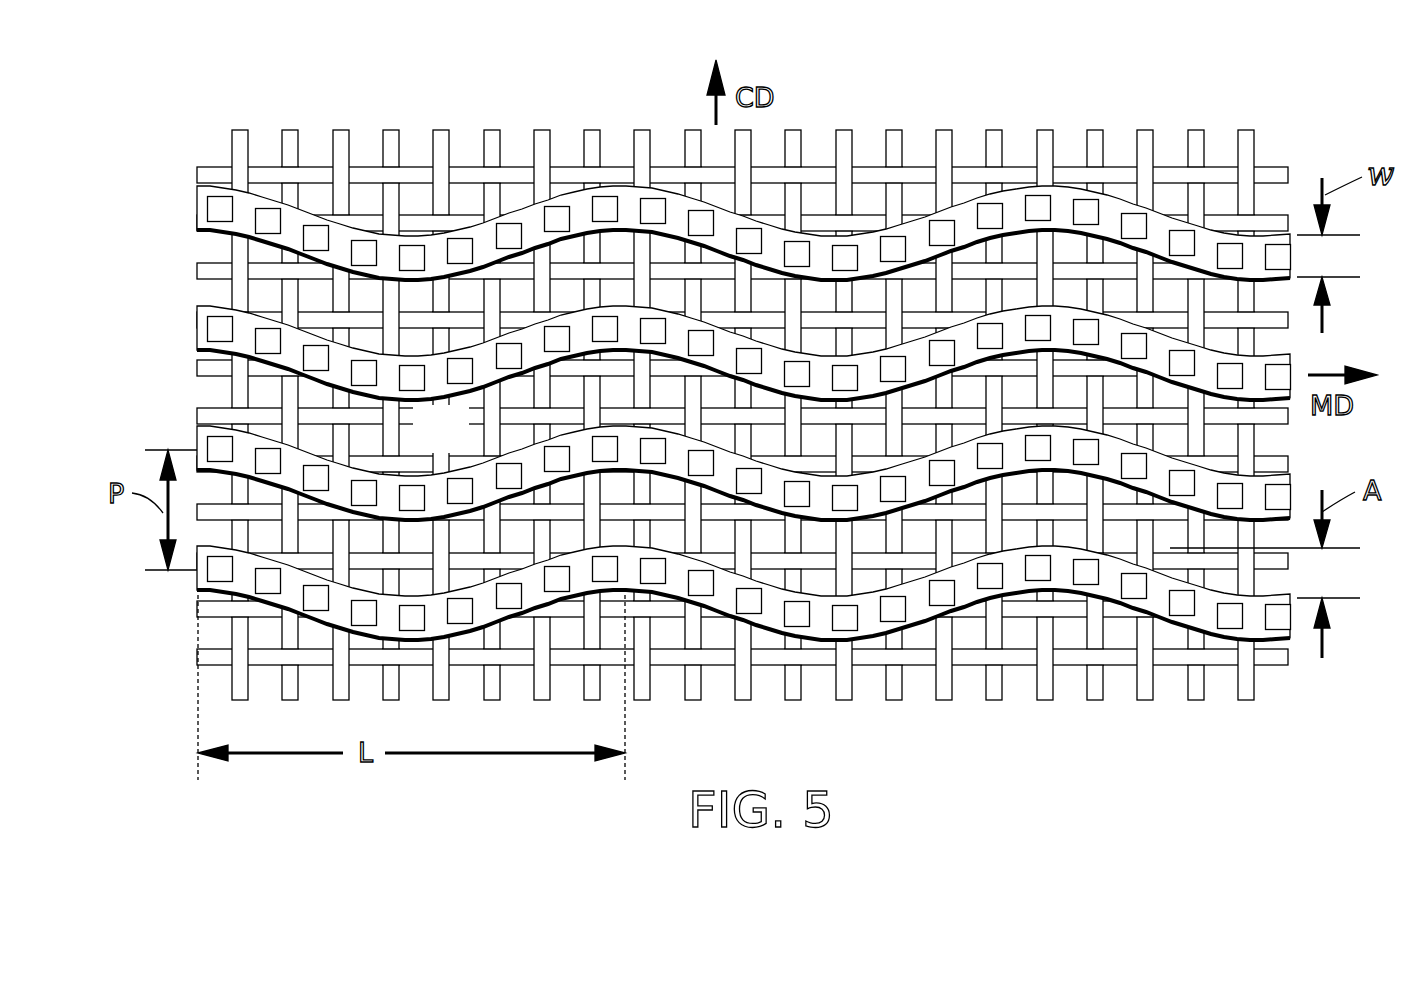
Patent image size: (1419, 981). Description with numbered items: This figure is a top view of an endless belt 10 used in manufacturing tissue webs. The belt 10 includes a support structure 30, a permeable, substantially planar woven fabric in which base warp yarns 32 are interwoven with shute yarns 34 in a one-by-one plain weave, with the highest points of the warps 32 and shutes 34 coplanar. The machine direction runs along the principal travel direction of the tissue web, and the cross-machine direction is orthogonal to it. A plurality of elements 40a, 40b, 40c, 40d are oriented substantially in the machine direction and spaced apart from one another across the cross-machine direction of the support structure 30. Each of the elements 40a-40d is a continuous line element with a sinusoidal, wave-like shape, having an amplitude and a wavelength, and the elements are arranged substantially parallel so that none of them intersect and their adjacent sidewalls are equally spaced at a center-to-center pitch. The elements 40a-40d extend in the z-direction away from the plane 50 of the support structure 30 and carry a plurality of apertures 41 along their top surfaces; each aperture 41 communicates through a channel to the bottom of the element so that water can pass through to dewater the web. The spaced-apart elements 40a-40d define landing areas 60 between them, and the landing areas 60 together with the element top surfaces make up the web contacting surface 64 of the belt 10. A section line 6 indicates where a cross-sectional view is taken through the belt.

The endless belt 10 is at (719, 357).
The support structure 30 is at (467, 197).
The base warp yarns 32 is at (215, 172).
The shute yarns 34 is at (240, 137).
The element 40a is at (691, 210).
The element 40b is at (197, 330).
The element 40c is at (197, 447).
The element 40d is at (197, 578).
The apertures 41 is at (218, 207).
The plane of the support structure 50 is at (457, 443).
The landing areas 60 is at (520, 297).
The web contacting surface 64 is at (1068, 145).
The section line 6- 6 is at (845, 738).